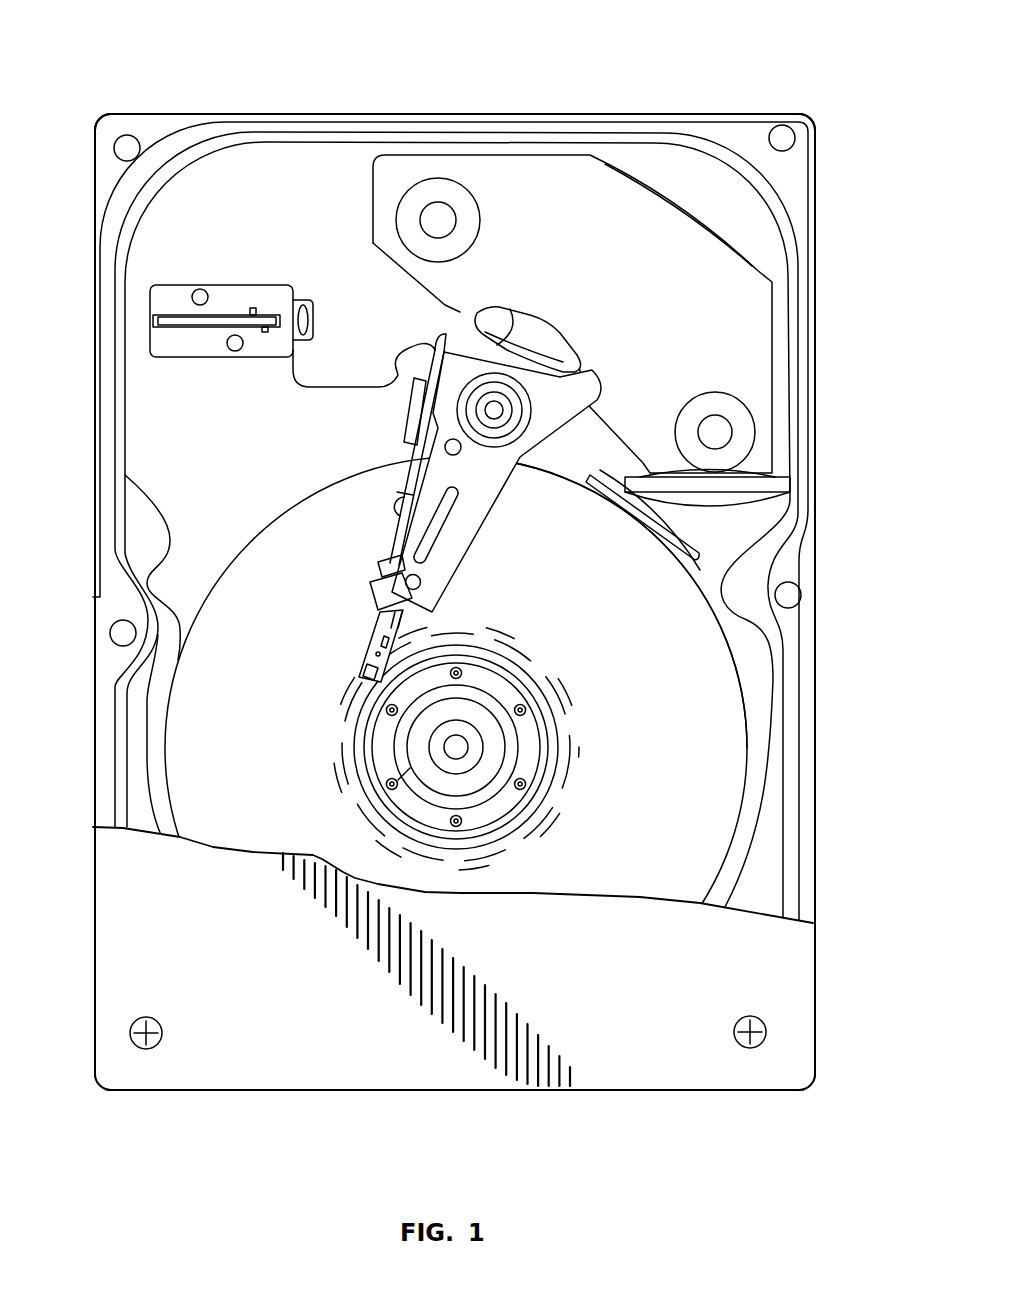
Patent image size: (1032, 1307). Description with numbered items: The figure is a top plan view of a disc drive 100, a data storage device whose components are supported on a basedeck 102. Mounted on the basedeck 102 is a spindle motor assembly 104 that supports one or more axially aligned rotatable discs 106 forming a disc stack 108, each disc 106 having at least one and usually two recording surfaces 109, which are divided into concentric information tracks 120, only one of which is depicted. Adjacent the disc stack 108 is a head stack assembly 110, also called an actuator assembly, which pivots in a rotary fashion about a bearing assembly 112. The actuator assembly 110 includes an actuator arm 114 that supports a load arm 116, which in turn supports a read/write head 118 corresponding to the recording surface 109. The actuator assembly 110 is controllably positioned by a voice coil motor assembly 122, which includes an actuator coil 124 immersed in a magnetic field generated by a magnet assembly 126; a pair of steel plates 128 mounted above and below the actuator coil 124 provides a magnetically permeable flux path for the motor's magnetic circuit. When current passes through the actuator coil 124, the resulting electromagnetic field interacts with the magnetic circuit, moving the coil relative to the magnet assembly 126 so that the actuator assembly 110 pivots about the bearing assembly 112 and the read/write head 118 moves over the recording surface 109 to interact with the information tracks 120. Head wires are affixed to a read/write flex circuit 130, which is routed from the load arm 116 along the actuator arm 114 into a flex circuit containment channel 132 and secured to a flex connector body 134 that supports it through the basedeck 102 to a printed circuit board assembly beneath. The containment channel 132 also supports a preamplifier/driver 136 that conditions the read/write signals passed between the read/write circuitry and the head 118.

The disc drive 100 is at (362, 90).
The basedeck 102 is at (290, 190).
The spindle motor assembly 104 is at (503, 690).
The rotatable disc 106 is at (747, 727).
The disc stack 108 is at (750, 767).
The recording surface 109 is at (650, 627).
The head stack assembly 110 is at (487, 520).
The bearing assembly 112 is at (535, 400).
The actuator arm 114 is at (423, 572).
The load arm 116 is at (373, 637).
The read/write head 118 is at (357, 673).
The information track 120 is at (543, 810).
The voice coil motor assembly 122 is at (760, 270).
The actuator coil 124 is at (497, 323).
The magnet assembly 126 is at (517, 177).
The steel plate 128 is at (743, 355).
The read/write flex circuit 130 is at (297, 382).
The flex circuit containment channel 132 is at (397, 497).
The flex connector body 134 is at (163, 348).
The preamplifier/driver 136 is at (413, 403).